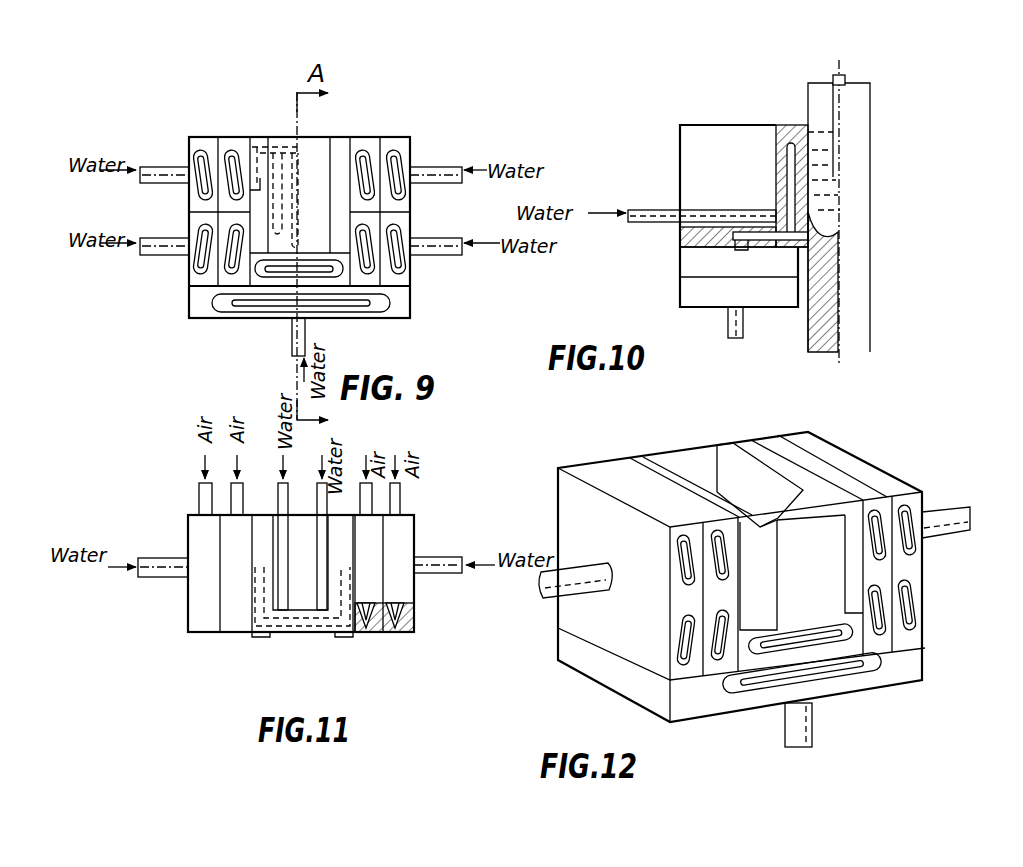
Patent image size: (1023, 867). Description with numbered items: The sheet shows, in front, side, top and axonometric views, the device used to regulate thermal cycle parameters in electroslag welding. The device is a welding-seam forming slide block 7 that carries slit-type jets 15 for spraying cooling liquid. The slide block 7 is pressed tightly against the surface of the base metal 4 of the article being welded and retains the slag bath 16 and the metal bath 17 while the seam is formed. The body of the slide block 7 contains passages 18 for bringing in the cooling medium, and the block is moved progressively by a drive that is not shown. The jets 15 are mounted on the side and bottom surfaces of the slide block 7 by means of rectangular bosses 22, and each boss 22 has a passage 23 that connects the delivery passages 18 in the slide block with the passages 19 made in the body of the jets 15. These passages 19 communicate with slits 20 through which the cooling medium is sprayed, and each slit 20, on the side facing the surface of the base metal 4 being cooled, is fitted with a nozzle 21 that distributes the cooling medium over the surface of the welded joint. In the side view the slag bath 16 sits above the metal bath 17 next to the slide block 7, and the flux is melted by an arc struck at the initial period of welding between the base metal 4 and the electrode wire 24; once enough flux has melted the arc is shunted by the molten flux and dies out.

In FIG. 10, the base metal 4 is at (815, 100).
In FIG. 9, the slide block 7 is at (336, 142).
In FIG. 10, the slide block 7 is at (786, 126).
In FIG. 11, the slide block 7 is at (259, 637).
In FIG. 12, the slide block 7 is at (756, 508).
In FIG. 9, the jets 15 is at (412, 138).
In FIG. 10, the jets 15 is at (699, 309).
In FIG. 11, the jets 15 is at (186, 609).
In FIG. 12, the jets 15 is at (570, 466).
In FIG. 10, the slag bath 16 is at (825, 188).
In FIG. 10, the metal bath 17 is at (832, 210).
In FIG. 9, the passages 18 is at (276, 143).
In FIG. 10, the passages 18 is at (790, 160).
In FIG. 11, the passages 18 is at (313, 628).
In FIG. 10, the passages 19 is at (742, 246).
In FIG. 9, the slits 20 is at (228, 280).
In FIG. 11, the slits 20 is at (408, 610).
In FIG. 12, the slits 20 is at (806, 640).
In FIG. 11, the nozzle 21 is at (395, 631).
In FIG. 10, the bosses 22 is at (684, 234).
In FIG. 12, the bosses 22 is at (642, 457).
In FIG. 10, the passages 23 is at (748, 224).
In FIG. 10, the electrode wire 24 is at (848, 80).